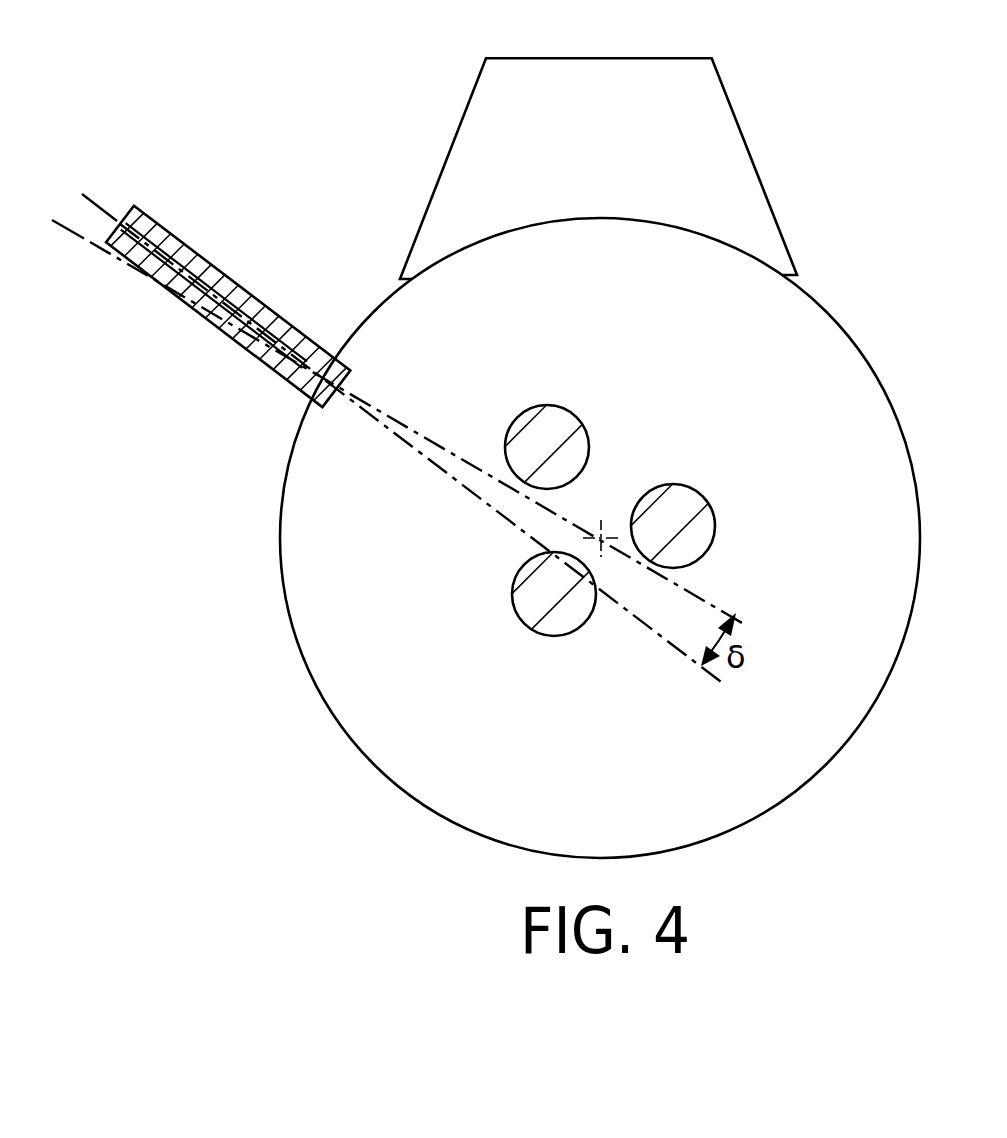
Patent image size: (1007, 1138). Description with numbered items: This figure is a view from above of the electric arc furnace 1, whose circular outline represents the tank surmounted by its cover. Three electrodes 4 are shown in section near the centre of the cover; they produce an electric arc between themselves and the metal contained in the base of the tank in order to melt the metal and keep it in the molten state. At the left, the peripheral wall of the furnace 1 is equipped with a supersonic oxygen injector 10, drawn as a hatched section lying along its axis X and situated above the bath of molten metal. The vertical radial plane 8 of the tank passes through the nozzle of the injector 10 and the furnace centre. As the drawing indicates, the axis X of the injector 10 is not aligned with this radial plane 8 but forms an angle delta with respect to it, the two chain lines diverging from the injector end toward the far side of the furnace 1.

The electric arc furnace 1 is at (286, 634).
The electrodes 4 is at (654, 516).
The vertical radial plane 8 is at (80, 242).
The supersonic oxygen injector 10 is at (224, 258).
The axis X is at (100, 206).